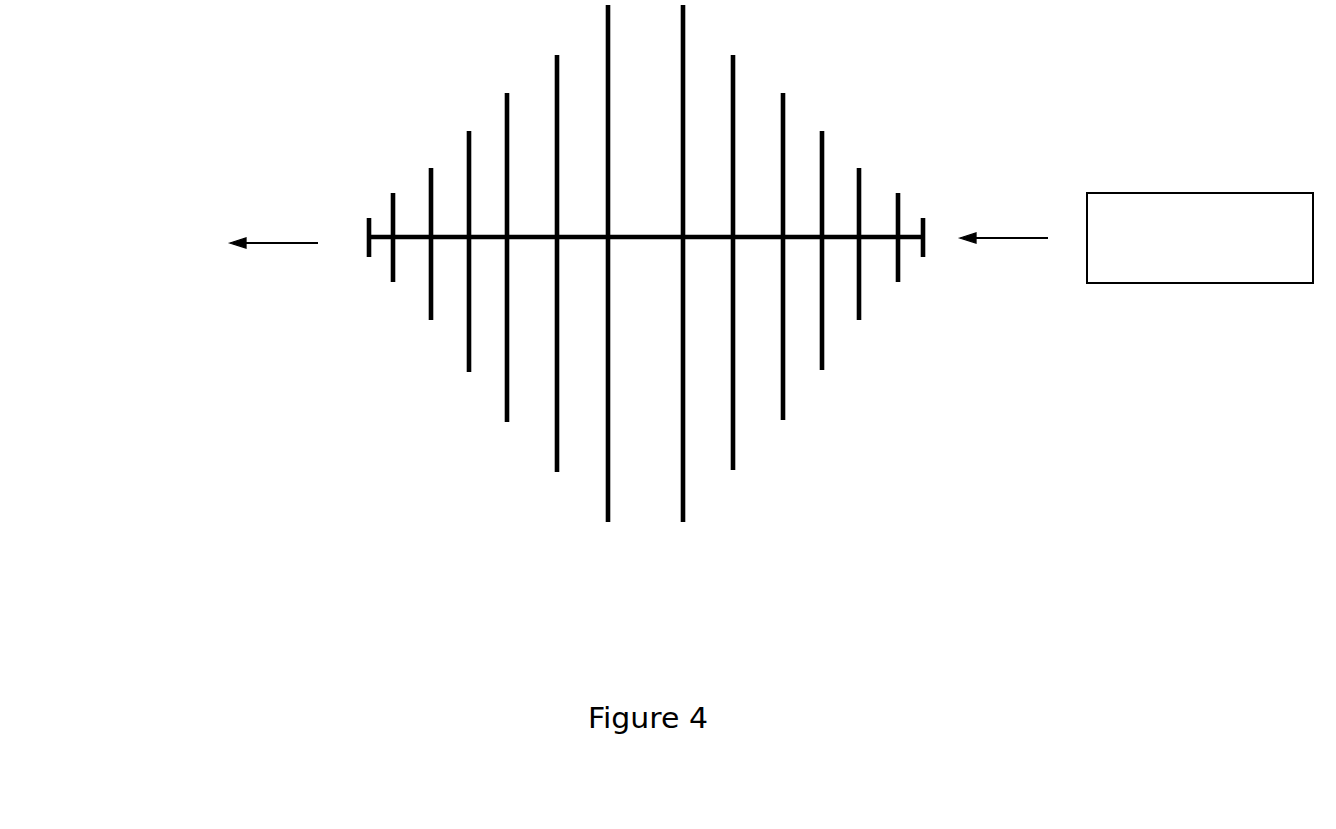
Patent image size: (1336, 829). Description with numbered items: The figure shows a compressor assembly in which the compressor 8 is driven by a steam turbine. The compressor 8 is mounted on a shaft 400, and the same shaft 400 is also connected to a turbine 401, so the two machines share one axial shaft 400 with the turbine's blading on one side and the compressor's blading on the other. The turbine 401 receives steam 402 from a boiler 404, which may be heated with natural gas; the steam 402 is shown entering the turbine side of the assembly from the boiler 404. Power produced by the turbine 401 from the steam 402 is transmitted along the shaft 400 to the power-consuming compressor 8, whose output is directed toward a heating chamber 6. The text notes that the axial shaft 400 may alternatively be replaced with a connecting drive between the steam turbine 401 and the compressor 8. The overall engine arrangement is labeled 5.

The gas turbine engine 5 is at (652, 320).
The compressor 8 is at (483, 263).
The turbine 401 is at (815, 263).
The shaft 400 is at (873, 240).
The steam 402 is at (1000, 213).
The boiler 404 is at (1175, 193).
The heating chamber 6 is at (194, 252).